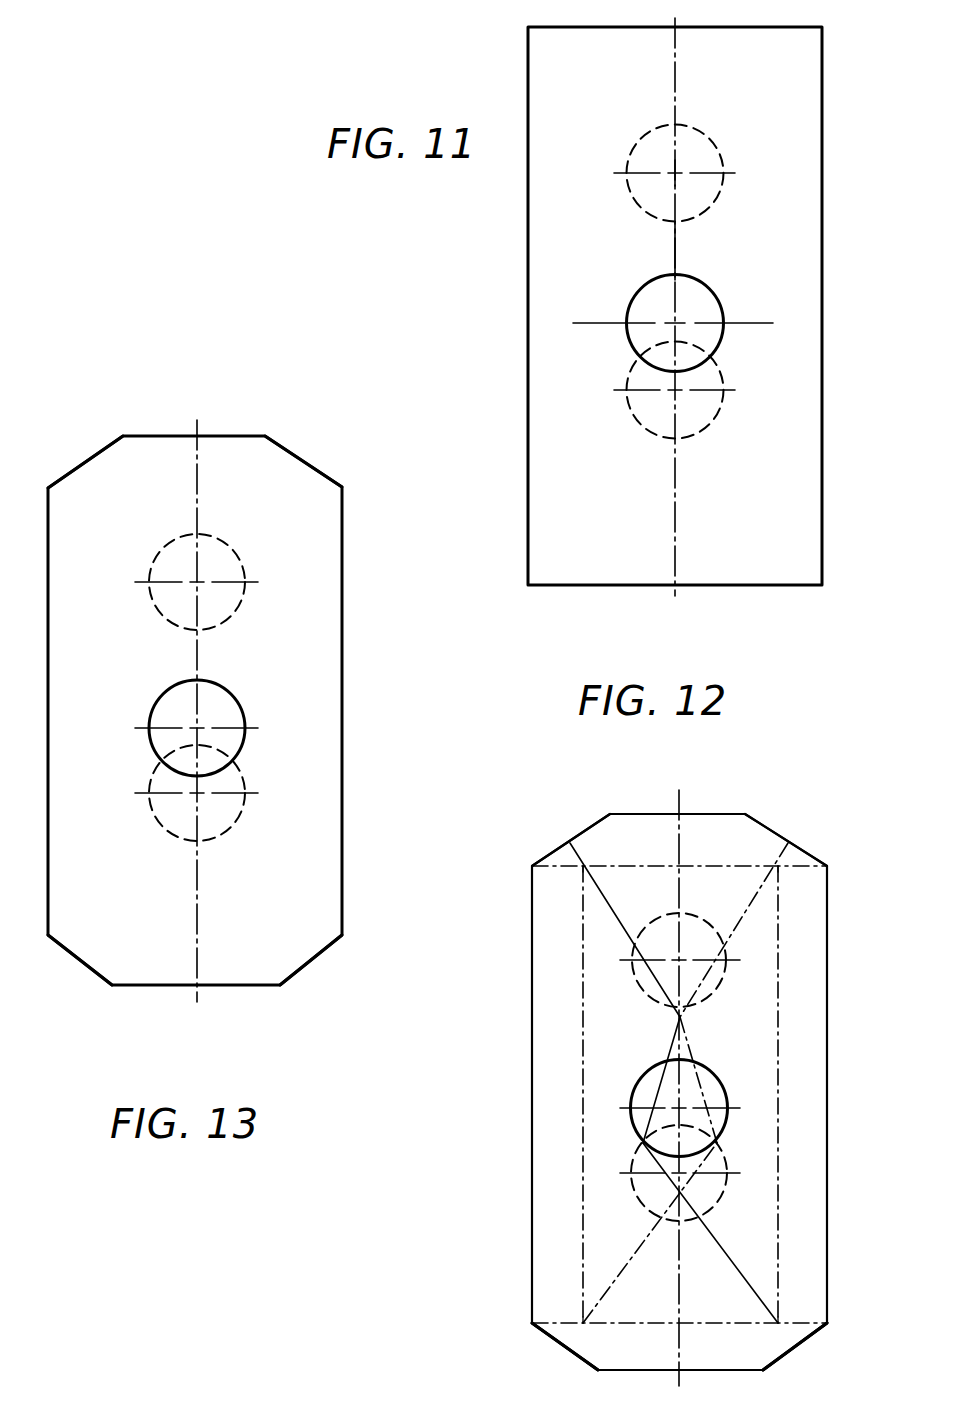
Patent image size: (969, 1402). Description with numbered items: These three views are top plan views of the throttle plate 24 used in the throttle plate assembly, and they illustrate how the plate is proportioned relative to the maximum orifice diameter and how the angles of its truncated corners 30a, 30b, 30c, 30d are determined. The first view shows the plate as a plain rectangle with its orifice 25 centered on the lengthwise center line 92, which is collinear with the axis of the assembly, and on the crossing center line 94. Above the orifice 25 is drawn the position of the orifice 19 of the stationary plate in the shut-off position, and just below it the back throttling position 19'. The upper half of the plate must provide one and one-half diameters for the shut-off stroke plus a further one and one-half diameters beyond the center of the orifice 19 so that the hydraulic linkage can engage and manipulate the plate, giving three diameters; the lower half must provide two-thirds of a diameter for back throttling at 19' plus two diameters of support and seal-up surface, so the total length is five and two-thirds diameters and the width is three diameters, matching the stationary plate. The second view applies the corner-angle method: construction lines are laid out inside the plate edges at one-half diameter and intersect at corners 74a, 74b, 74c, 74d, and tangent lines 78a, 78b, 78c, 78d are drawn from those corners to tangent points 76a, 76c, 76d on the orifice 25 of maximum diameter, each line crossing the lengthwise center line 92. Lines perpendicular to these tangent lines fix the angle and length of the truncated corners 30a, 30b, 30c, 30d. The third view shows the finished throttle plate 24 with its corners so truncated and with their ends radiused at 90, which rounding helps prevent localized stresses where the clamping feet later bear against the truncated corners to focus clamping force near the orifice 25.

In FIG. 11, the throttle plate 24 is at (600, 117).
In FIG. 13, the throttle plate 24 is at (148, 516).
In FIG. 12, the throttle plate 24 is at (657, 903).
In FIG. 11, the orifice of the stationary plate 19 is at (693, 156).
In FIG. 13, the orifice of the stationary plate 19 is at (217, 585).
In FIG. 12, the orifice of the stationary plate 19 is at (695, 971).
In FIG. 11, the back throttling orifice position 19' is at (694, 400).
In FIG. 13, the back throttling orifice position 19' is at (212, 810).
In FIG. 12, the back throttling orifice position 19' is at (614, 1173).
In FIG. 11, the orifice 25 is at (707, 300).
In FIG. 13, the orifice 25 is at (225, 702).
In FIG. 12, the orifice 25 is at (726, 1130).
In FIG. 11, the lengthwise center line 92 is at (678, 248).
In FIG. 11, the transverse center line 94 is at (744, 324).
In FIG. 13, the radiused ends 90 is at (48, 486).
In FIG. 13, the truncated corner 30a is at (88, 963).
In FIG. 12, the truncated corner 30a is at (557, 1342).
In FIG. 13, the truncated corner 30b is at (312, 962).
In FIG. 12, the truncated corner 30b is at (800, 1344).
In FIG. 13, the truncated corner 30c is at (300, 462).
In FIG. 12, the truncated corner 30c is at (800, 849).
In FIG. 13, the truncated corner 30d is at (92, 460).
In FIG. 12, the truncated corner 30d is at (578, 840).
In FIG. 12, the corner of construction lines 74a is at (583, 1322).
In FIG. 12, the corner of construction lines 74b is at (778, 1322).
In FIG. 12, the corner of construction lines 74c is at (778, 867).
In FIG. 12, the corner of construction lines 74d is at (583, 867).
In FIG. 12, the tangent point 76a is at (720, 1144).
In FIG. 12, the tangent point 76c is at (652, 1075).
In FIG. 12, the tangent point 76d is at (718, 1075).
In FIG. 12, the tangent line 78a is at (632, 1262).
In FIG. 12, the tangent line 78b is at (726, 1256).
In FIG. 12, the tangent line 78c is at (735, 928).
In FIG. 12, the tangent line 78d is at (624, 930).